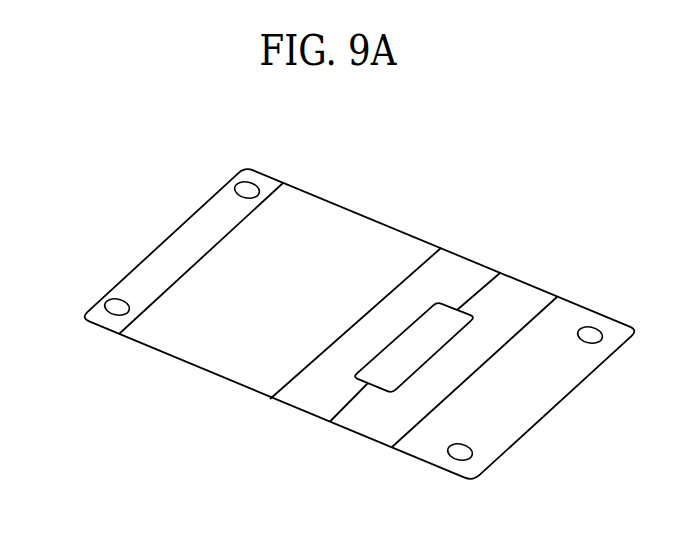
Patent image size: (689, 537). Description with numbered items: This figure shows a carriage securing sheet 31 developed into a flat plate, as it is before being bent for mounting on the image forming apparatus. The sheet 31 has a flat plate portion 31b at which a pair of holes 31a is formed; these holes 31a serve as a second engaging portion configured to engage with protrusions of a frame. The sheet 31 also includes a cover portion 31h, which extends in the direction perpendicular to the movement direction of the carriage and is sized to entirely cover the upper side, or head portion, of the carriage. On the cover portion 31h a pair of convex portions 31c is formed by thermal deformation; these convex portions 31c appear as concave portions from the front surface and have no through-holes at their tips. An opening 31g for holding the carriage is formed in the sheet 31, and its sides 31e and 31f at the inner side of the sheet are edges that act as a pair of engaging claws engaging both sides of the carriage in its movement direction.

The carriage securing sheet 31 is at (402, 238).
The holes 31a is at (595, 331).
The flat plate portion 31b is at (549, 399).
The convex portions 31c is at (236, 175).
The side of the opening 31e is at (448, 300).
The side of the opening 31f is at (352, 378).
The opening 31g is at (393, 337).
The cover portion 31h is at (350, 218).